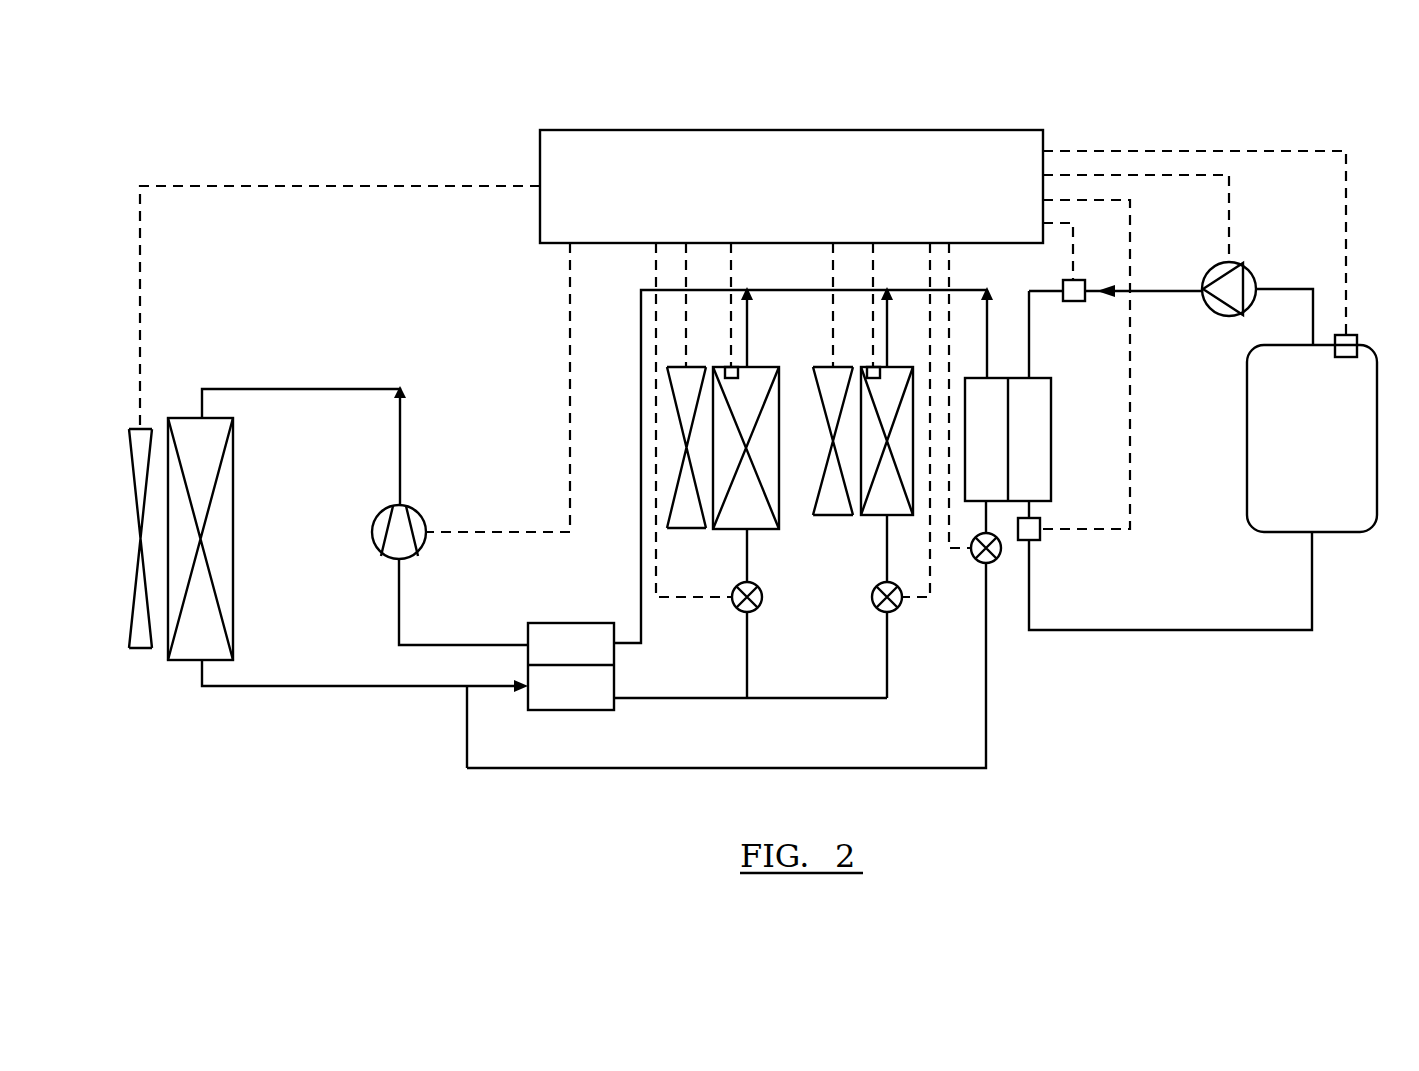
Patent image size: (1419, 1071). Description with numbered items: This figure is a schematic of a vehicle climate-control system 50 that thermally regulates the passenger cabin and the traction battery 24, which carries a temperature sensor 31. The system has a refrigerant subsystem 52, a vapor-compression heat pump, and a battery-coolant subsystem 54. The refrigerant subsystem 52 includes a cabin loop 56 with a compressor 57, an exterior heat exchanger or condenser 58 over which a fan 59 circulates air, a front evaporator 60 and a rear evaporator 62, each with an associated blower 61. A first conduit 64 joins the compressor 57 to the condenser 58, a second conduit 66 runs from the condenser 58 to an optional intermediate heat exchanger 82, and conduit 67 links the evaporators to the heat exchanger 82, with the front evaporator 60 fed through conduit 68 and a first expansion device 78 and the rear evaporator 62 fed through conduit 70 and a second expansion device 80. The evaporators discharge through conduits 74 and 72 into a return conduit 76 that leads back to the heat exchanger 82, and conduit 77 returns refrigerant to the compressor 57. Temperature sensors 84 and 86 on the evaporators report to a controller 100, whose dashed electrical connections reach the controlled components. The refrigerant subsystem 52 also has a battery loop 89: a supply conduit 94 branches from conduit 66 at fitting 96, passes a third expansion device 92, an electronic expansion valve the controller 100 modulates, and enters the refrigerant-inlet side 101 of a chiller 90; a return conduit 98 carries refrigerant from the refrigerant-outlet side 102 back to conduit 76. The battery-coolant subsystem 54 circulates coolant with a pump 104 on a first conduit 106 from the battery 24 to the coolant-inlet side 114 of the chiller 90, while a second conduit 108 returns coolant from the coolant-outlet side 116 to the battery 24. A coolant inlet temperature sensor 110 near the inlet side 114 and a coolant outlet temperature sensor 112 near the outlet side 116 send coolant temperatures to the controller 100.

The traction battery 24 is at (1378, 456).
The temperature sensor 31 is at (1358, 341).
The climate-control system 50 is at (1329, 73).
The refrigerant subsystem 52 is at (547, 421).
The battery-coolant subsystem 54 is at (1325, 596).
The cabin loop 56 is at (630, 335).
The compressor 57 is at (372, 531).
The exterior heat exchanger 58 is at (183, 418).
The fan 59 is at (140, 648).
The first interior heat exchanger 60 is at (757, 367).
The blower 61 is at (672, 505).
The second interior heat exchanger 62 is at (900, 367).
The first conduit 64 is at (323, 389).
The second conduit 66 is at (345, 686).
The conduit 67 is at (683, 698).
The conduit 68 is at (747, 647).
The conduit 70 is at (887, 658).
The conduit 72 is at (888, 320).
The conduit 74 is at (748, 328).
The return conduit 76 is at (641, 568).
The conduit 77 is at (399, 598).
The first expansion device 78 is at (737, 610).
The second expansion device 80 is at (893, 583).
The intermediate heat exchanger 82 is at (540, 622).
The temperature sensor 84 is at (731, 367).
The temperature sensor 86 is at (871, 367).
The battery loop 89 is at (1002, 729).
The chiller 90 is at (1051, 478).
The third expansion device 92 is at (994, 562).
The supply conduit 94 is at (938, 768).
The fitting 96 is at (467, 688).
The return conduit 98 is at (988, 328).
The controller 100 is at (805, 130).
The refrigerant-inlet side 101 is at (975, 542).
The refrigerant-outlet side 102 is at (990, 378).
The pump 104 is at (1256, 282).
The first conduit 106 is at (1162, 289).
The second conduit 108 is at (1175, 630).
The coolant inlet temperature sensor 110 is at (1075, 301).
The coolant outlet temperature sensor 112 is at (1035, 545).
The coolant-inlet side 114 is at (1030, 378).
The coolant-outlet side 116 is at (1040, 508).